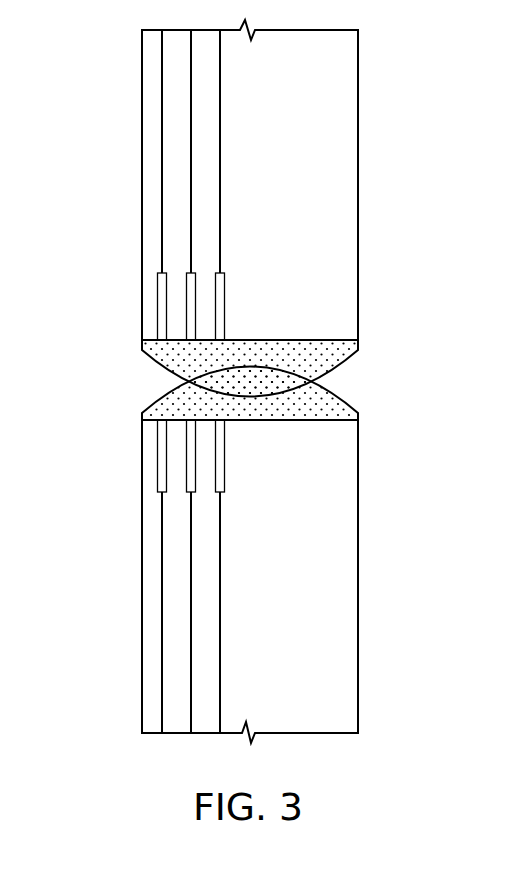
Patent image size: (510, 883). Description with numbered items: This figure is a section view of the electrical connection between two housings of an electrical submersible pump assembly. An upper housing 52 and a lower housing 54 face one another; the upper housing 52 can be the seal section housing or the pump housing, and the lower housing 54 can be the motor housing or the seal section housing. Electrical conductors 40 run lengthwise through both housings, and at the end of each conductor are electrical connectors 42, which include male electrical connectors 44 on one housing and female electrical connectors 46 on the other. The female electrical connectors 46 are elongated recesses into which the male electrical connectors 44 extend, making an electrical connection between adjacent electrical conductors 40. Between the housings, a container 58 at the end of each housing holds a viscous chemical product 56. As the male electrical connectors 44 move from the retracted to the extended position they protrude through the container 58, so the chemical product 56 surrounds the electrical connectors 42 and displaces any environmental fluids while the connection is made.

The electrical conductors 40 is at (220, 116).
The electrical connectors 42 is at (107, 352).
The male electrical connectors 44 is at (225, 463).
The female electrical connectors 46 is at (225, 300).
The upper housing 52 is at (142, 70).
The lower housing 54 is at (142, 625).
The chemical product 56 is at (318, 398).
The container 58 is at (150, 409).